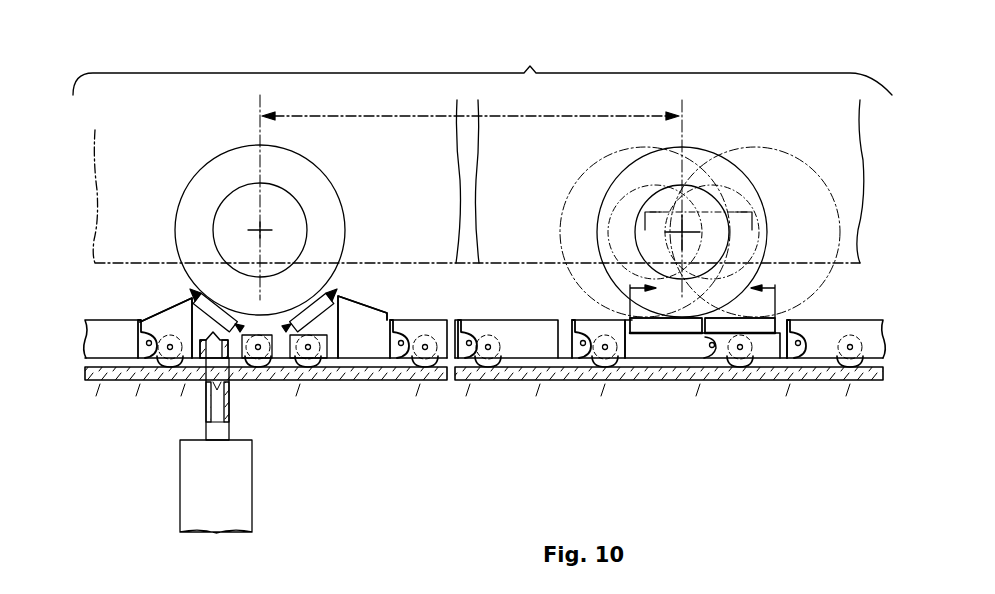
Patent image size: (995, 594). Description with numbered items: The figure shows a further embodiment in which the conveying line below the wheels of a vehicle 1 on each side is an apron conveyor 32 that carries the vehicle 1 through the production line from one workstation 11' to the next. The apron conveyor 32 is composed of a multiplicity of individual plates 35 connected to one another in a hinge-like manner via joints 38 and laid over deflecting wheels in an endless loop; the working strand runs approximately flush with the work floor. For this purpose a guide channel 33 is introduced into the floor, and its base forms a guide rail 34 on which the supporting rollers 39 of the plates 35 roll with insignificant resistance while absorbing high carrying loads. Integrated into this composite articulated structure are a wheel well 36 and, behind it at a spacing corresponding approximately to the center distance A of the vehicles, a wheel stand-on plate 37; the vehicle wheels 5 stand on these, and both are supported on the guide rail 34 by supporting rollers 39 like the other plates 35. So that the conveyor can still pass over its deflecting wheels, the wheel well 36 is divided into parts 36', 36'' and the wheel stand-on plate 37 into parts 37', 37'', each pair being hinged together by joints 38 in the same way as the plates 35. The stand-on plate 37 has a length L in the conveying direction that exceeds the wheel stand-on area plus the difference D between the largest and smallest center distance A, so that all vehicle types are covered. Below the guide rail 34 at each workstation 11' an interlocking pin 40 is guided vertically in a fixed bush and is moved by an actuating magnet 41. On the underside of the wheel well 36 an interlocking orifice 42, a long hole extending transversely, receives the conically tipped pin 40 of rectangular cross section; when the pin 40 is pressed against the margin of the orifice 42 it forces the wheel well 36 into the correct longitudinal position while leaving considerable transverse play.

The vehicle 1 is at (93, 200).
The vehicle wheel 5 is at (347, 233).
The workstation 11' is at (482, 66).
The apron conveyor 32 is at (530, 316).
The guide channel 33 is at (101, 322).
The guide rail 34 is at (392, 313).
The plate 35 is at (520, 335).
The wheel well 36 is at (260, 292).
The part of the divided wheel well 36' is at (158, 409).
The part of the divided wheel well 36'' is at (361, 393).
The wheel stand-on plate 37 is at (688, 287).
The part of the wheel stand-on plate 37' is at (666, 380).
The part of the wheel stand-on plate 37'' is at (750, 375).
The joint 38 is at (284, 381).
The supporting roller 39 is at (148, 383).
The interlocking pin 40 is at (218, 409).
The actuating magnet 41 is at (225, 504).
The interlocking orifice 42 is at (263, 310).
The center distance A is at (471, 197).
The difference between largest and smallest center distance D is at (704, 209).
The length of wheel stand-on support L is at (752, 262).